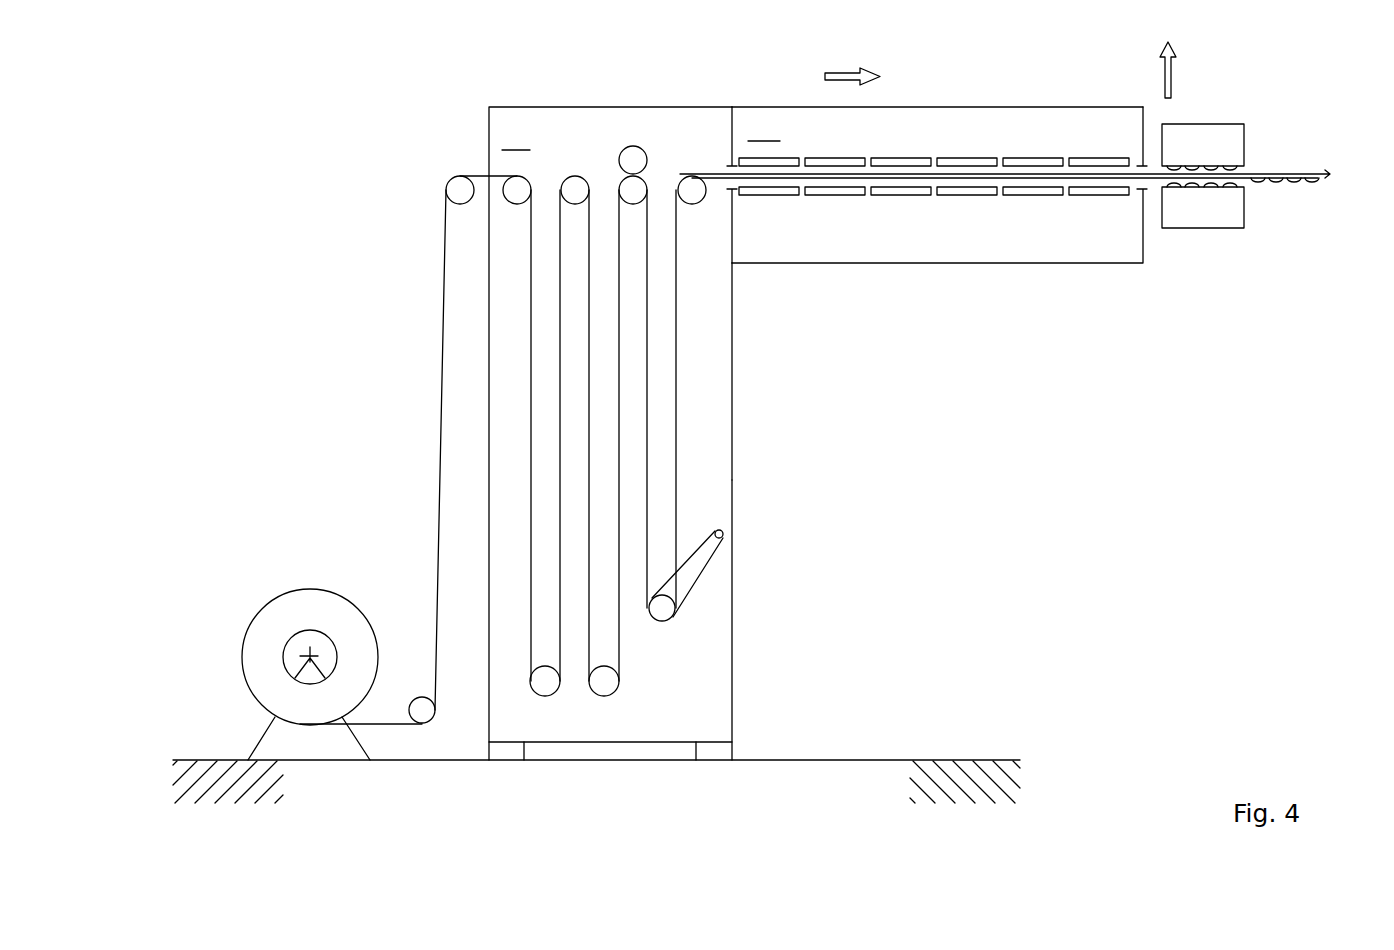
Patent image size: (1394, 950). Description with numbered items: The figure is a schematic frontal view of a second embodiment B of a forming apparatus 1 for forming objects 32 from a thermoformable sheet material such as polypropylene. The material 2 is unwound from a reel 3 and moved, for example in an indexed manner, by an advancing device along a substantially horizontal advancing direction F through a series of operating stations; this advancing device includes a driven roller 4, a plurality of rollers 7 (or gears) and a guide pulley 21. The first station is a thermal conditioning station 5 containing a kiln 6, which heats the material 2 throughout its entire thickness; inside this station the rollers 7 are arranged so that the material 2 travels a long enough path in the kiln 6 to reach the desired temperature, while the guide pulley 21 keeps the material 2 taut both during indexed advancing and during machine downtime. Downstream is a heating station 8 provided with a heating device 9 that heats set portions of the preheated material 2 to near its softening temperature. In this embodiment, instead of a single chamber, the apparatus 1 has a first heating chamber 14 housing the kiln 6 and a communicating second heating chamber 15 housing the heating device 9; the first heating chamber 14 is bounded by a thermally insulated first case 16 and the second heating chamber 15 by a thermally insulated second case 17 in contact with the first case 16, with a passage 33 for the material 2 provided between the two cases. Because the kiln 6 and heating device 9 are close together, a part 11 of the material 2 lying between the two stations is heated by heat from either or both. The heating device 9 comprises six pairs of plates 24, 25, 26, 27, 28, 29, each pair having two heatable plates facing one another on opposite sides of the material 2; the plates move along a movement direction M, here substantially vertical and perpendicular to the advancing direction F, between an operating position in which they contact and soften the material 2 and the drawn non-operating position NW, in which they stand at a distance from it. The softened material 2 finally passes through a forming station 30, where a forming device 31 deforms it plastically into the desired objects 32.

The second embodiment B is at (318, 122).
The forming apparatus 1 is at (448, 112).
The material 2 is at (445, 437).
The reel 3 is at (273, 622).
The driven roller 4 is at (633, 160).
The thermal conditioning station 5 is at (605, 80).
The kiln 6 is at (708, 410).
The rollers 7 is at (460, 190).
The heating station 8 is at (928, 77).
The heating device 9 is at (908, 136).
The part of the material 11 is at (709, 159).
The first heating chamber 14 is at (518, 135).
The second heating chamber 15 is at (765, 125).
The first case 16 is at (732, 492).
The second case 17 is at (1043, 107).
The guide pulley 21 is at (662, 608).
The pair of plates 24 is at (763, 218).
The pair of plates 25 is at (829, 218).
The pair of plates 26 is at (895, 218).
The pair of plates 27 is at (961, 218).
The pair of plates 28 is at (1027, 218).
The pair of plates 29 is at (1093, 218).
The forming station 30 is at (1213, 101).
The forming device 31 is at (1244, 145).
The objects 32 is at (1318, 179).
The passage 33 is at (730, 183).
The advancing direction F is at (825, 76).
The movement direction M is at (1165, 80).
The non-operating position NW is at (1021, 136).